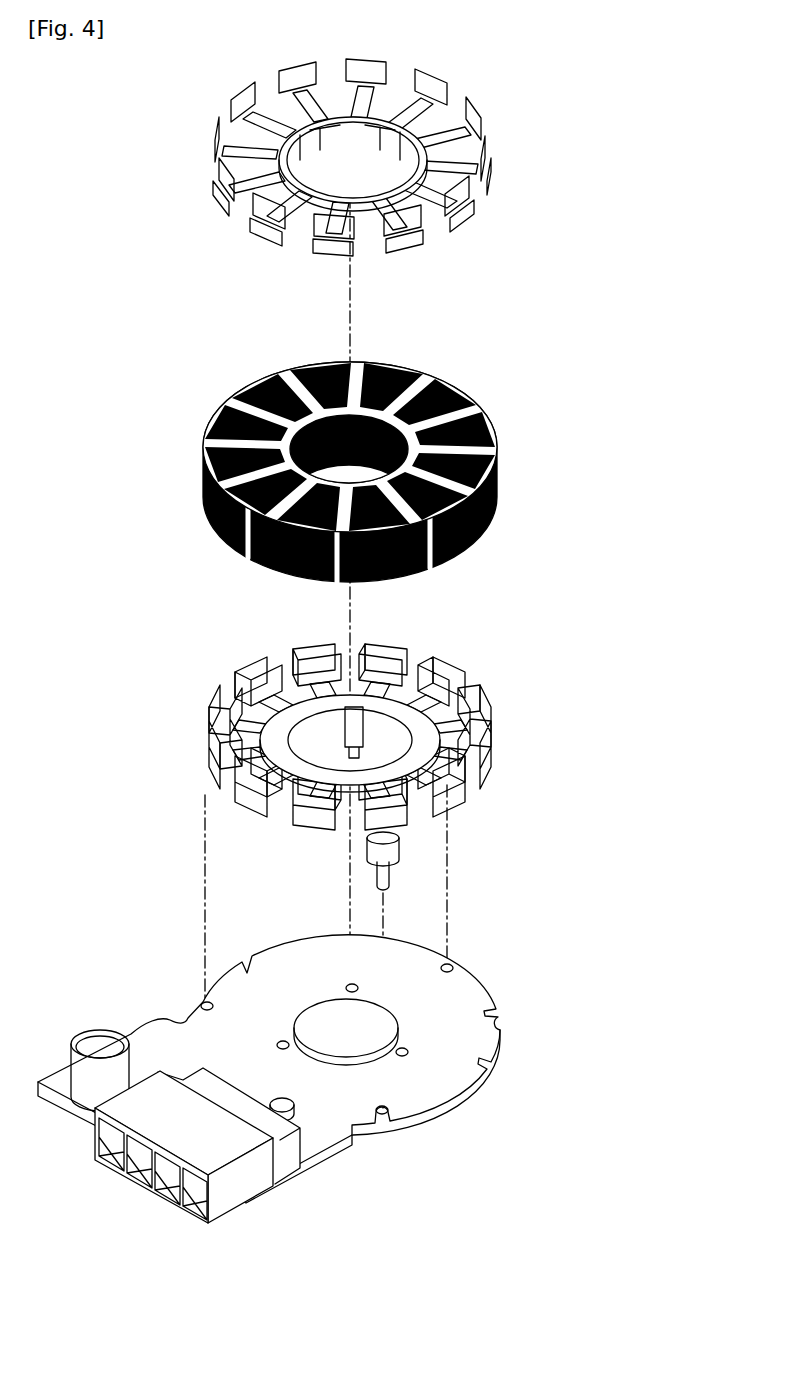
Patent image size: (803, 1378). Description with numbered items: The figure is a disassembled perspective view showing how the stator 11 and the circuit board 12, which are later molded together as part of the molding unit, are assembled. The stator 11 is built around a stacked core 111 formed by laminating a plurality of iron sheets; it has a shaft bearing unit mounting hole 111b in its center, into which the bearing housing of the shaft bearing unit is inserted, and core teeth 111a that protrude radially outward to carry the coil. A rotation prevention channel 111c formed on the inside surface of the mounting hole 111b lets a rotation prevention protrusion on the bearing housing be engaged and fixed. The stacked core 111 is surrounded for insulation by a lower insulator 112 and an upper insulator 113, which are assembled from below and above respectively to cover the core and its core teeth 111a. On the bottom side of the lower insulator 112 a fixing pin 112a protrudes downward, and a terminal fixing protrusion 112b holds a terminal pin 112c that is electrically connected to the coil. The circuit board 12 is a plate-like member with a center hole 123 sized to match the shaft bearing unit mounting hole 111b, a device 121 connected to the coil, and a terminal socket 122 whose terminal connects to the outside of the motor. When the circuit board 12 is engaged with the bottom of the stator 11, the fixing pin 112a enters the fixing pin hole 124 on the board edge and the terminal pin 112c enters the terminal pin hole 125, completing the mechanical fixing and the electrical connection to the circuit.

The stator 11 is at (558, 794).
The stacked core 111 is at (187, 460).
The core teeth 111a is at (276, 562).
The shaft bearing unit mounting hole 111b is at (317, 417).
The rotation prevention channel 111c is at (393, 427).
The lower insulator 112 is at (184, 754).
The fixing pin 112a is at (400, 720).
The terminal fixing protrusion 112b is at (401, 855).
The terminal pin 112c is at (394, 877).
The upper insulator 113 is at (197, 176).
The circuit board 12 is at (512, 1018).
The device 121 is at (101, 1028).
The terminal socket 122 is at (190, 1212).
The center hole 123 is at (330, 1006).
The fixing pin hole 124 is at (410, 1058).
The terminal pin hole 125 is at (378, 1128).